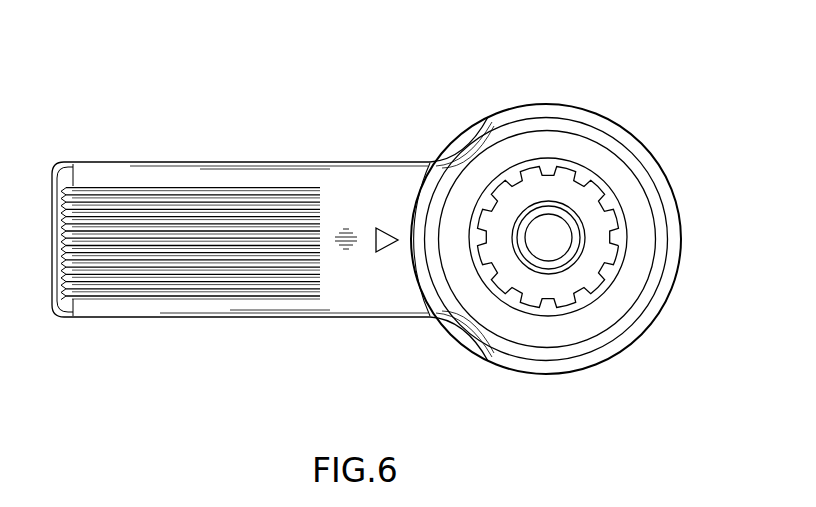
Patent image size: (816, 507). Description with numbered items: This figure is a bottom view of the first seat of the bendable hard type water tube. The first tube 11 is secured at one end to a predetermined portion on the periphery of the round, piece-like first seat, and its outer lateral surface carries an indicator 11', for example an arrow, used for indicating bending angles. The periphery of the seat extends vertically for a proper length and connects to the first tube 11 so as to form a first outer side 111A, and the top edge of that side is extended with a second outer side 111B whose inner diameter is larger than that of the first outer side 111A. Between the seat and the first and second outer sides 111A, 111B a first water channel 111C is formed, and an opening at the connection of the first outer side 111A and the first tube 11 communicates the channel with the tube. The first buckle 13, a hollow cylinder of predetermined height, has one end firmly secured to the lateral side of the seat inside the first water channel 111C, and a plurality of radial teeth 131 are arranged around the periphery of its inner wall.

The first tube 11 is at (273, 269).
The indicator 11' is at (357, 144).
The first outer side 111A is at (638, 168).
The second outer side 111B is at (660, 177).
The first water channel 111C is at (642, 264).
The first buckle 13 is at (537, 160).
The radial teeth 131 is at (548, 177).